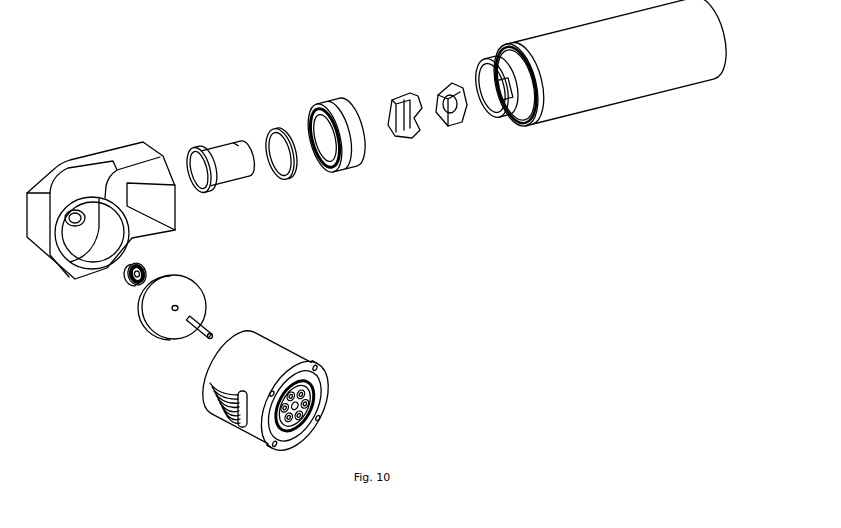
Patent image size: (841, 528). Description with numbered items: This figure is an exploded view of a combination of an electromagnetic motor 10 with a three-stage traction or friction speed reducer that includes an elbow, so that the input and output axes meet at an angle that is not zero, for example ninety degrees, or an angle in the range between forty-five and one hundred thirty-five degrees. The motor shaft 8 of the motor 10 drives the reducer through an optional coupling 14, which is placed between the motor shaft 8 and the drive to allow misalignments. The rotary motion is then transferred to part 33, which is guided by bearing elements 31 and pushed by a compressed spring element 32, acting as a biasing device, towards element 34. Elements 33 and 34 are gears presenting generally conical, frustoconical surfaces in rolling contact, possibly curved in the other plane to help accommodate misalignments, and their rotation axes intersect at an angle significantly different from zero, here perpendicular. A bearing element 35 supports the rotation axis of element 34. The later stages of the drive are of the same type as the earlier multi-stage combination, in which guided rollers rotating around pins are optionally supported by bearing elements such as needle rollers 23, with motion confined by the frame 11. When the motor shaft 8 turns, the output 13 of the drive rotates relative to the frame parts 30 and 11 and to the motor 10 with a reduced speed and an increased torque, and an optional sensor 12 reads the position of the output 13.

The motor shaft 8 is at (503, 100).
The electromagnetic motor 10 is at (570, 103).
The frame 11 is at (280, 352).
The sensor 12 is at (242, 422).
The output 13 is at (318, 398).
The coupling 14 is at (418, 158).
The needle rollers 23 is at (205, 321).
The frame part 30 is at (92, 160).
The bearing elements 31 is at (357, 162).
The compressed spring element 32 is at (288, 177).
The gear 33 is at (210, 163).
The gear 34 is at (141, 327).
The bearing element 35 is at (120, 282).